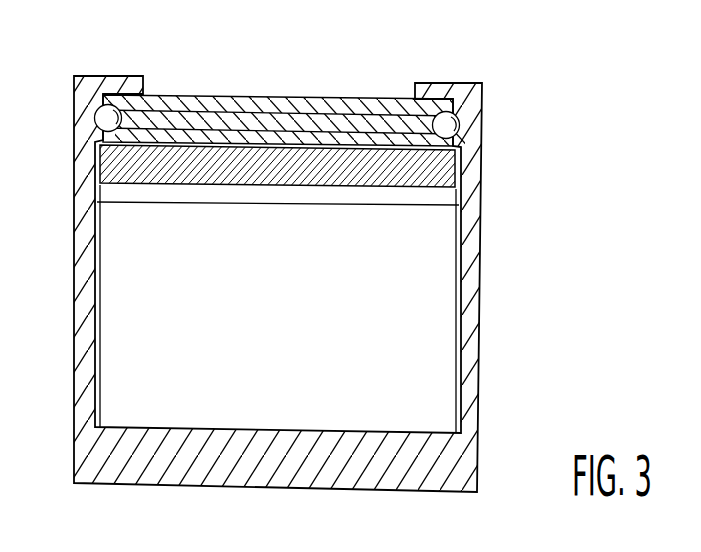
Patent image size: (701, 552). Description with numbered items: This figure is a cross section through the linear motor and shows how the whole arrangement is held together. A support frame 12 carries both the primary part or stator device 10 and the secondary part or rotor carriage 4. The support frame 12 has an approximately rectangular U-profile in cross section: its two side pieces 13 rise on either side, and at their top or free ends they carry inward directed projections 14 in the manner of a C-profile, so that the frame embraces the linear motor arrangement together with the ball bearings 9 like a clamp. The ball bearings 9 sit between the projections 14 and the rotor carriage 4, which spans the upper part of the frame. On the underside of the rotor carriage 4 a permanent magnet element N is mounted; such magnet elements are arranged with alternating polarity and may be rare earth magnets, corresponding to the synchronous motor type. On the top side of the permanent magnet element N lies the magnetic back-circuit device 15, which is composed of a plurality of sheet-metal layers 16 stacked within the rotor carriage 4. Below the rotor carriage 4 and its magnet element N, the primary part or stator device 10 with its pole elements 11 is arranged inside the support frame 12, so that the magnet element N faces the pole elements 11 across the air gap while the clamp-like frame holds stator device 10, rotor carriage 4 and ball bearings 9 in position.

The rotor carriage 4 is at (284, 75).
The ball bearings 9 is at (95, 115).
The primary part (stator device) 10 is at (468, 349).
The pole elements 11 is at (313, 307).
The support frame 12 is at (167, 478).
The side pieces 13 is at (77, 279).
The inward directed projections 14 is at (109, 73).
The magnetic back-circuit device 15 is at (165, 77).
The sheet-metal layers 16 is at (258, 138).
The permanent magnet element N is at (460, 174).